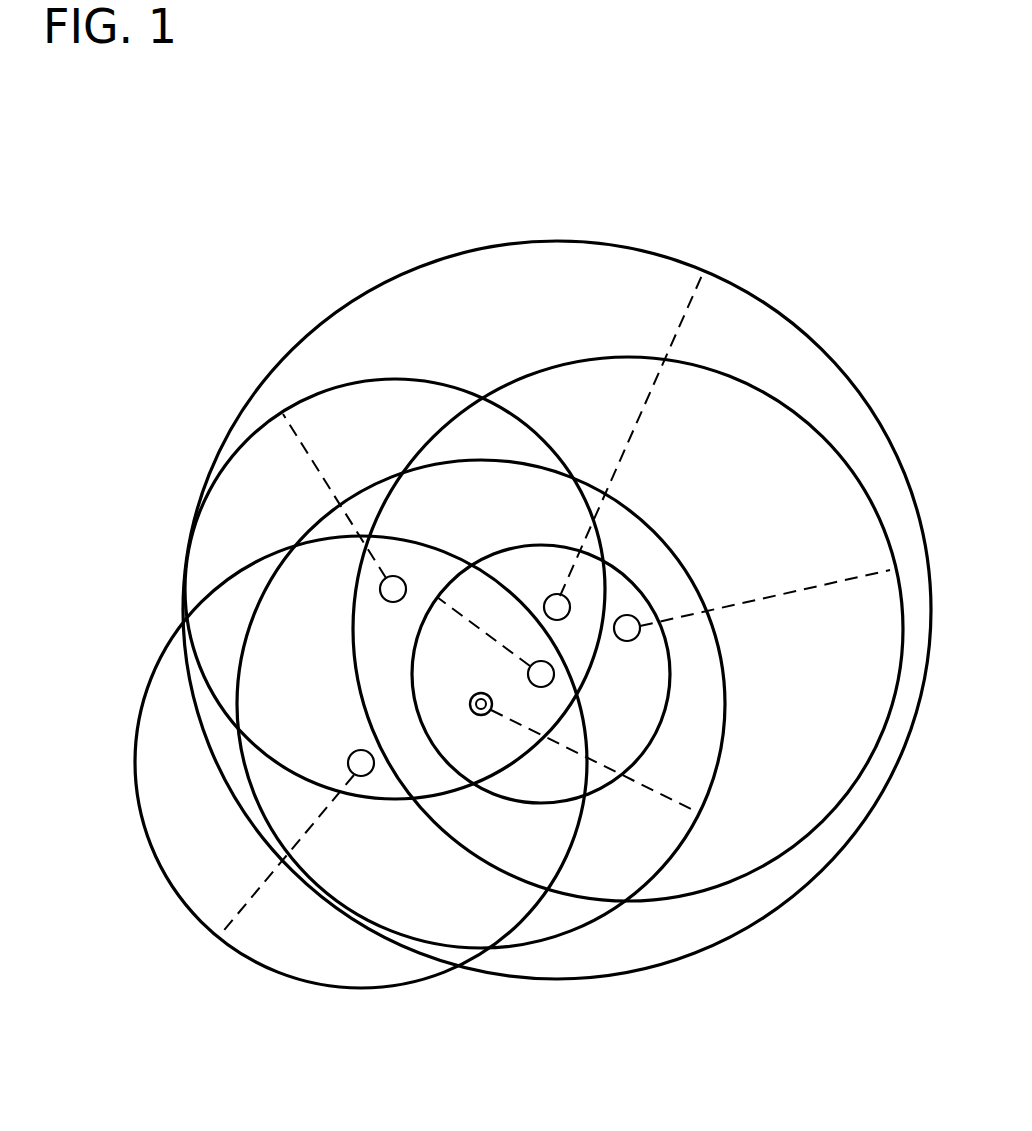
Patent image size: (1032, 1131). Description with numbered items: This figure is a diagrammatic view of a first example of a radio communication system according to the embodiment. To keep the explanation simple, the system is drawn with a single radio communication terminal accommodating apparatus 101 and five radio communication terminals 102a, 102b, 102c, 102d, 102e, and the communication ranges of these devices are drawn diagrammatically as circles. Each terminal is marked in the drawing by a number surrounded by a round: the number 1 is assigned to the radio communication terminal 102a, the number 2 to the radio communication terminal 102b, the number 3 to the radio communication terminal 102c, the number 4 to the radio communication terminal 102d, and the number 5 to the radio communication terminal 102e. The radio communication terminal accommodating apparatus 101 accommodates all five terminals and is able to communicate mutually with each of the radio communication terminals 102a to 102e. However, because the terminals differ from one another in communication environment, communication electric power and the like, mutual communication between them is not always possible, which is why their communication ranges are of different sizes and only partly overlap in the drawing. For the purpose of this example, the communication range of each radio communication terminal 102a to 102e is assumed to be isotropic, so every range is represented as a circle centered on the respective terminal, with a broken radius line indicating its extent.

The number assigned to radio communication terminal 1 is at (623, 446).
The number assigned to radio communication terminal 2 is at (344, 508).
The number assigned to radio communication terminal 3 is at (297, 842).
The number assigned to radio communication terminal 4 is at (752, 605).
The number assigned to radio communication terminal 5 is at (495, 642).
The radio communication terminal accommodating apparatus 101 is at (478, 715).
The radio communication terminal 102a is at (553, 594).
The radio communication terminal 102b is at (380, 590).
The radio communication terminal 102c is at (363, 777).
The radio communication terminal 102d is at (632, 640).
The radio communication terminal 102e is at (543, 688).